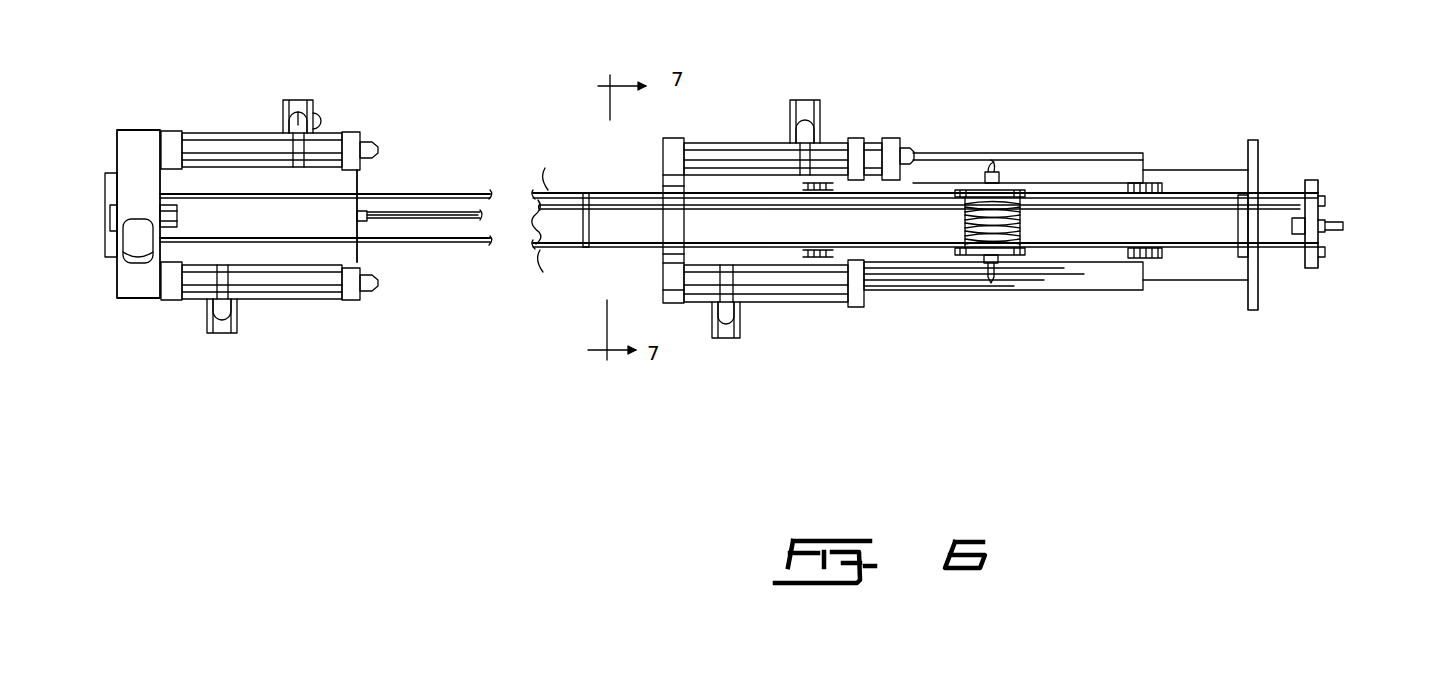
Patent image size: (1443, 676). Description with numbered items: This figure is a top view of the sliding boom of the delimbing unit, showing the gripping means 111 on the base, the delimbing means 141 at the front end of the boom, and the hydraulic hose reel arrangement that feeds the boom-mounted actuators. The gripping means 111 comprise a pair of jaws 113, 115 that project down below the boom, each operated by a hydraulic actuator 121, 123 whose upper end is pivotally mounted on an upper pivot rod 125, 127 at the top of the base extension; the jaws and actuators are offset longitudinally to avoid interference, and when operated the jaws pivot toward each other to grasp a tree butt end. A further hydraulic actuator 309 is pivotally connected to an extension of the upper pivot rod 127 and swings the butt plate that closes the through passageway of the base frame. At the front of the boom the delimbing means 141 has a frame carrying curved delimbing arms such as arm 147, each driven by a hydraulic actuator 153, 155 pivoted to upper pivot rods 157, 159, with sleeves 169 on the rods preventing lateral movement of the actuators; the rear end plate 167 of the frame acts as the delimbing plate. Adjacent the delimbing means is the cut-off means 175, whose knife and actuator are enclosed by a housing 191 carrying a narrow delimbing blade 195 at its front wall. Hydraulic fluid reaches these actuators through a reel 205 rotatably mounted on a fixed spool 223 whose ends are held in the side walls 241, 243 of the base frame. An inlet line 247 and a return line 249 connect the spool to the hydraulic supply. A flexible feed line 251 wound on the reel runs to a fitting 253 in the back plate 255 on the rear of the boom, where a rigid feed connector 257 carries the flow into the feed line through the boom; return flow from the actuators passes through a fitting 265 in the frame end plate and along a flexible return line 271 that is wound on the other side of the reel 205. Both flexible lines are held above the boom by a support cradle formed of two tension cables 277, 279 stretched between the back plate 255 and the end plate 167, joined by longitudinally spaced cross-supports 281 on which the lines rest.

The gripping means 111 is at (765, 346).
The jaw 113 is at (725, 340).
The jaw 115 is at (812, 100).
The hydraulic actuator 121 is at (745, 315).
The hydraulic actuator 123 is at (833, 128).
The upper pivot rod 125 is at (662, 285).
The upper pivot rod 127 is at (662, 146).
The delimbing means 141 is at (232, 105).
The delimbing arm 147 is at (300, 100).
The hydraulic actuator 153 is at (205, 310).
The hydraulic actuator 155 is at (320, 118).
The upper pivot rod 157 is at (372, 285).
The upper pivot rod 159 is at (378, 150).
The end plate 167 is at (358, 246).
The sleeve 169 is at (185, 132).
The cut-off means 175 is at (150, 125).
The housing 191 is at (133, 300).
The delimbing blade 195 is at (105, 186).
The reel 205 is at (963, 215).
The spool 223 is at (998, 174).
The side wall 241 is at (1048, 183).
The side wall 243 is at (1088, 265).
The inlet line 247 is at (988, 262).
The return line 249 is at (992, 162).
The flexible feed line 251 is at (1185, 232).
The fitting 253 is at (1298, 218).
The back plate 255 is at (1318, 182).
The rigid feed connector 257 is at (1345, 228).
The fitting 265 is at (365, 210).
The flexible return line 271 is at (440, 212).
The tension cable 277 is at (563, 248).
The tension cable 279 is at (548, 195).
The cross-support 281 is at (590, 225).
The hydraulic actuator 309 is at (878, 140).